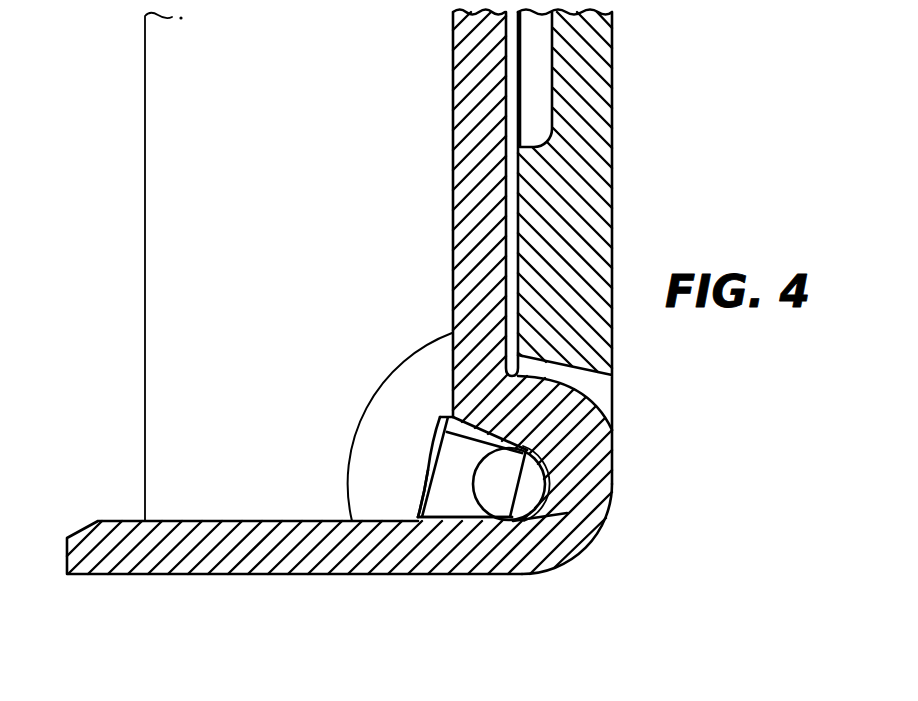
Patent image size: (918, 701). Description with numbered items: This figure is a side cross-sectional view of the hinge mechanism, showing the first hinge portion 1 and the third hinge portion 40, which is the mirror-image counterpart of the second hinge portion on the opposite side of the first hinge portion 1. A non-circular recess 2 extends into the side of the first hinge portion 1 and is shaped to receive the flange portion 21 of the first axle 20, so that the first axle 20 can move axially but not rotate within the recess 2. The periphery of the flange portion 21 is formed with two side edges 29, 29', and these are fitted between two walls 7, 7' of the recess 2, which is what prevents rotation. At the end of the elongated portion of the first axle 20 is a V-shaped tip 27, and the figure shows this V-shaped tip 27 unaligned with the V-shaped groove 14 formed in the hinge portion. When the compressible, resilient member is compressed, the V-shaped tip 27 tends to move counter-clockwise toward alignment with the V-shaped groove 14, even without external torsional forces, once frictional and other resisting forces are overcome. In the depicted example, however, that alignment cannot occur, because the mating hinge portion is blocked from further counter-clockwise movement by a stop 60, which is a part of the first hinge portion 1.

The first hinge portion 1 is at (453, 108).
The third hinge portion 40 is at (614, 97).
The stop 60 is at (506, 262).
The recess 2 is at (598, 413).
The V-shaped tip 27 is at (567, 513).
The V-shaped groove 14 is at (532, 458).
The wall 7 is at (426, 451).
The wall 7' is at (385, 427).
The side edge 29 is at (449, 381).
The side edge 29' is at (465, 572).
The flange portion 21 is at (445, 447).
The first axle 20 is at (422, 481).